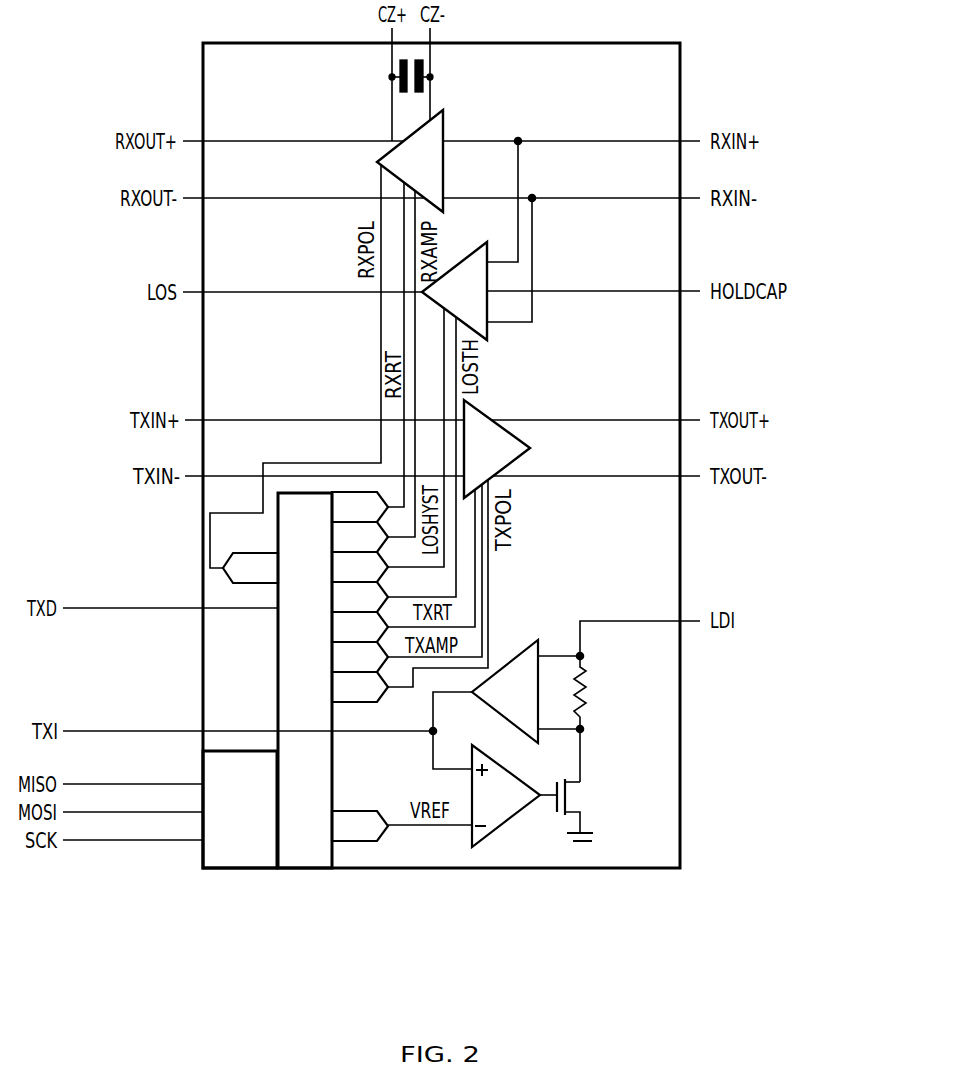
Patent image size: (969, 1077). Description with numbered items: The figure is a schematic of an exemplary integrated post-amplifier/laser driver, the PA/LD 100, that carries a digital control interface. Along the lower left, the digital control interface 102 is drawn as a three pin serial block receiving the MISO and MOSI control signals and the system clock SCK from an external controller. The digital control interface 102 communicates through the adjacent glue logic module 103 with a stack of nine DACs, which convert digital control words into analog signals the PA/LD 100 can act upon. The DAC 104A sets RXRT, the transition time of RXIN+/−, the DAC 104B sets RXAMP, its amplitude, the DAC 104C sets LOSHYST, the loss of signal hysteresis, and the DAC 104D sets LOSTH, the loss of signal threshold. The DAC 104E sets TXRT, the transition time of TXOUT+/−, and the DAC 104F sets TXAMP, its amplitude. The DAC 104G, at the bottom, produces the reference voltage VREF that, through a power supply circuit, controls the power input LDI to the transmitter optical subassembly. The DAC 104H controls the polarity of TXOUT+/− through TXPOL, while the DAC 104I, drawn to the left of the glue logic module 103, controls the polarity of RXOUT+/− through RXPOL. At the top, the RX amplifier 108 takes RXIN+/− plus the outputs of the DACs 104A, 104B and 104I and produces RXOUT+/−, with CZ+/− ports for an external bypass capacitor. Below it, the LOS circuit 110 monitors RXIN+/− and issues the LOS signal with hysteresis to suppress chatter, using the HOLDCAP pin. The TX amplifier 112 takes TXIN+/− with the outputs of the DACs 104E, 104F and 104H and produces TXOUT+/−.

The PA/LD 100 is at (705, 96).
The digital control interface 102 is at (233, 870).
The glue logic module 103 is at (307, 870).
The DAC 104A is at (330, 508).
The DAC 104B is at (330, 538).
The DAC 104C is at (330, 568).
The DAC 104D is at (330, 597).
The DAC 104E is at (330, 627).
The DAC 104F is at (330, 657).
The DAC 104G is at (363, 842).
The DAC 104H is at (330, 687).
The DAC 104I is at (225, 577).
The RX amplifier 108 is at (445, 130).
The LOS circuit 110 is at (478, 333).
The TX amplifier 112 is at (517, 458).